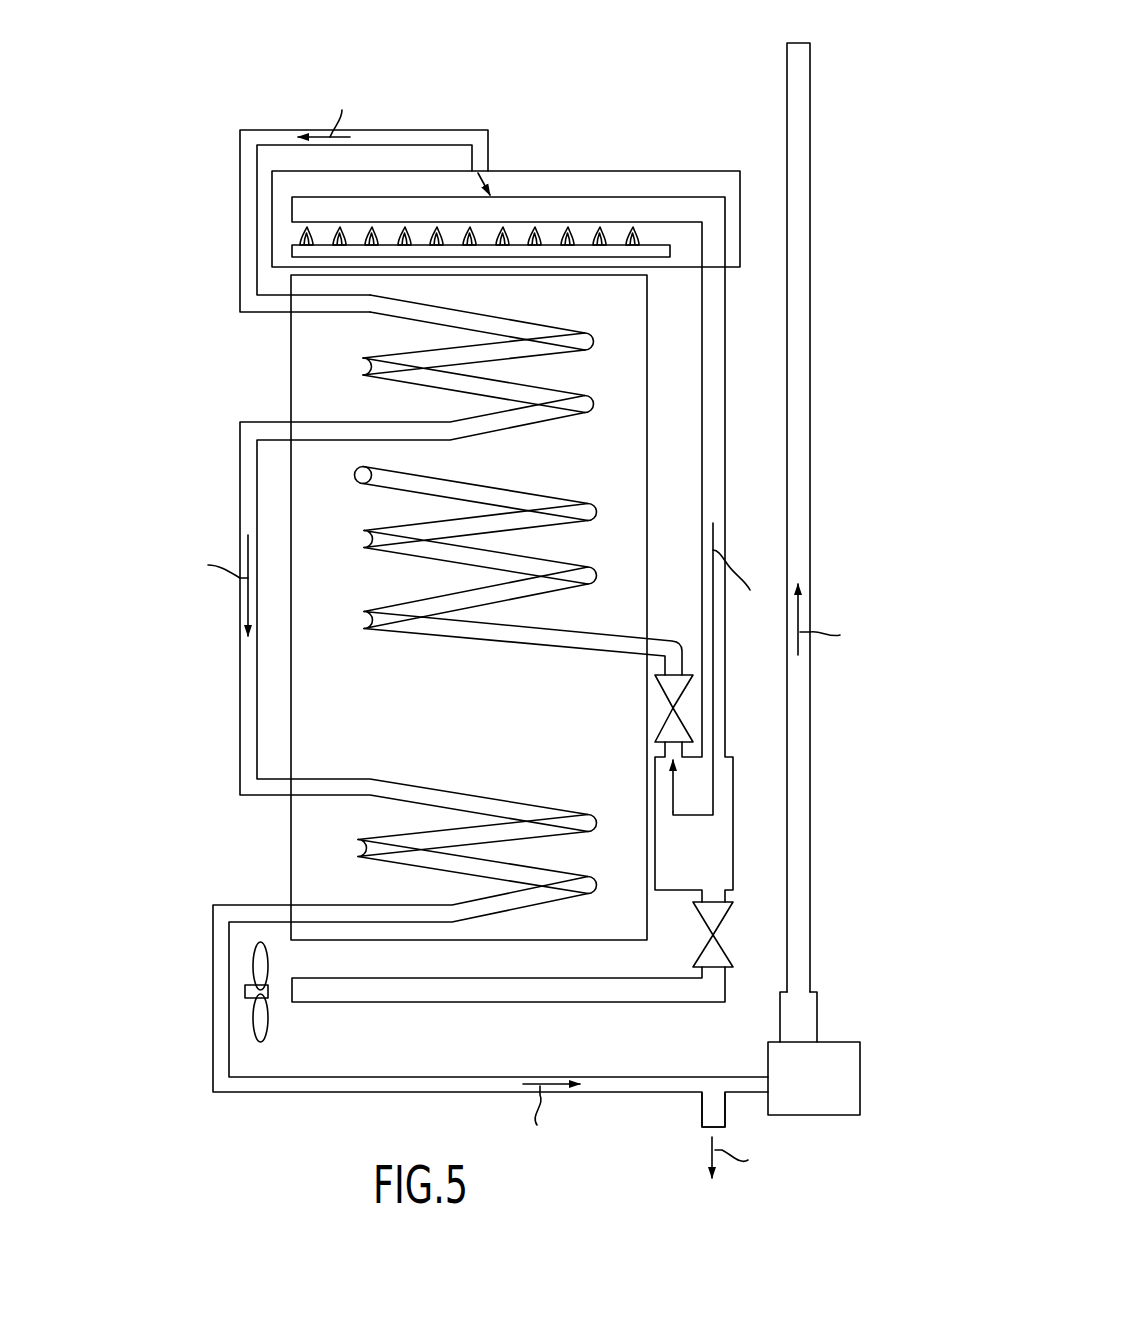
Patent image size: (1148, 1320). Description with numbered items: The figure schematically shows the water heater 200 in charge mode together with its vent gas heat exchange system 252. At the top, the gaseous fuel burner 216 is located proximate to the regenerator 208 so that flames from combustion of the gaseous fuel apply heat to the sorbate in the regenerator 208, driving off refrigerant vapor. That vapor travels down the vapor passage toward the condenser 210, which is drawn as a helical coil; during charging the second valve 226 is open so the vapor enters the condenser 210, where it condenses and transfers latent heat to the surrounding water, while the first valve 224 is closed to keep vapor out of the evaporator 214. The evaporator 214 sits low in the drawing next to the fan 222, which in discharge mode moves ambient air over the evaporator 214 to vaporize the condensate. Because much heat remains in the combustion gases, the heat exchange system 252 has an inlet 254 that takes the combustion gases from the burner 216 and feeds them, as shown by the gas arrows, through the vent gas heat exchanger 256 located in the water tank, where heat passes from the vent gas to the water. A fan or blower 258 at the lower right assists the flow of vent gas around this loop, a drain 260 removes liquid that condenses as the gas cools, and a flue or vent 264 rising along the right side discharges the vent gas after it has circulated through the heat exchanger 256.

The water heater 200 is at (623, 93).
The regenerator 208 is at (607, 207).
The condenser 210 is at (530, 492).
The evaporator 214 is at (387, 988).
The gaseous fuel burner 216 is at (663, 260).
The fan 222 is at (255, 1025).
The first valve 224 is at (717, 950).
The second valve 226 is at (668, 728).
The vent gas heat exchange system 252 is at (222, 158).
The inlet 254 is at (492, 200).
The vent gas heat exchanger 256 is at (535, 322).
The fan or blower 258 is at (838, 1048).
The drain 260 is at (705, 1105).
The flue or vent 264 is at (805, 112).